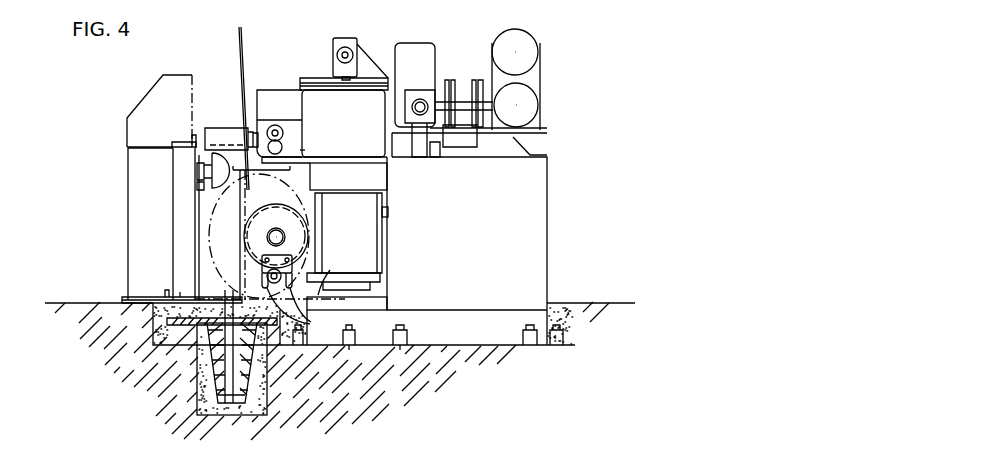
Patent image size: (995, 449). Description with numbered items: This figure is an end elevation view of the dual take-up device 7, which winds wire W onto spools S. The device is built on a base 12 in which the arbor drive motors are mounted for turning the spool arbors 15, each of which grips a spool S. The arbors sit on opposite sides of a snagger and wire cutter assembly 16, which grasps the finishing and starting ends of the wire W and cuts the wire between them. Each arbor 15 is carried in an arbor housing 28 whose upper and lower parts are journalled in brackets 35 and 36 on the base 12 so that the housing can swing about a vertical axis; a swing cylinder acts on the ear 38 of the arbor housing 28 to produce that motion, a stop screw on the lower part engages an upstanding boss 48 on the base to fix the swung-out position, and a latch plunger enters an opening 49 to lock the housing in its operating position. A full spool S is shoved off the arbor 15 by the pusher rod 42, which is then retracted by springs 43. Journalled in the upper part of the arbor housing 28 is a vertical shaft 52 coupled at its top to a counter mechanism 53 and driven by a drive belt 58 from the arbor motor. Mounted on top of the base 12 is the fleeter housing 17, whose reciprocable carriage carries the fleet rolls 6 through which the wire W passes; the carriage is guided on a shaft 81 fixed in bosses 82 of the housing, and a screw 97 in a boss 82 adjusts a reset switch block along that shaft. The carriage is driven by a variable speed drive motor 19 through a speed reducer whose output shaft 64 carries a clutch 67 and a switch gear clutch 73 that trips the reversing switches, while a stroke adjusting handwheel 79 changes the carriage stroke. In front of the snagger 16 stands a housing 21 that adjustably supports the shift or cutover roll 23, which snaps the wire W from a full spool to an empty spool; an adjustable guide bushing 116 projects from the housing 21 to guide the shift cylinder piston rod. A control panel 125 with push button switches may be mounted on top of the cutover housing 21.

The control panel 125 is at (137, 107).
The housing 21 is at (150, 179).
The shift or cutover roll 23 is at (212, 164).
The adjustable guide bushing 116 is at (197, 187).
The fleet rolls 6 is at (213, 128).
The wire W is at (244, 32).
The spool S is at (243, 227).
The spool arbor 15 is at (286, 234).
The pusher rod 42 is at (266, 275).
The springs 43 is at (305, 314).
The bracket 36 is at (360, 302).
The upstanding boss 48 is at (340, 276).
The opening 49 is at (318, 295).
The arbor housing 28 is at (385, 233).
The ear 38 is at (389, 210).
The bracket 35 is at (382, 175).
The fleeter housing 17 is at (290, 108).
The snagger and wire cutter assembly 16 is at (398, 9).
The vertical shaft 52 is at (330, 78).
The counter mechanism 53 is at (338, 36).
The shaft 81 is at (283, 131).
The screw 97 is at (282, 146).
The boss 82 is at (305, 149).
The stroke adjusting handwheel 79 is at (410, 108).
The output shaft 64 is at (394, 103).
The switch gear clutch 73 is at (447, 80).
The clutch 67 is at (480, 80).
The drive belt 58 is at (440, 150).
The variable speed drive motor 19 is at (542, 42).
The dual take-up device 7 is at (585, 128).
The base 12 is at (550, 268).